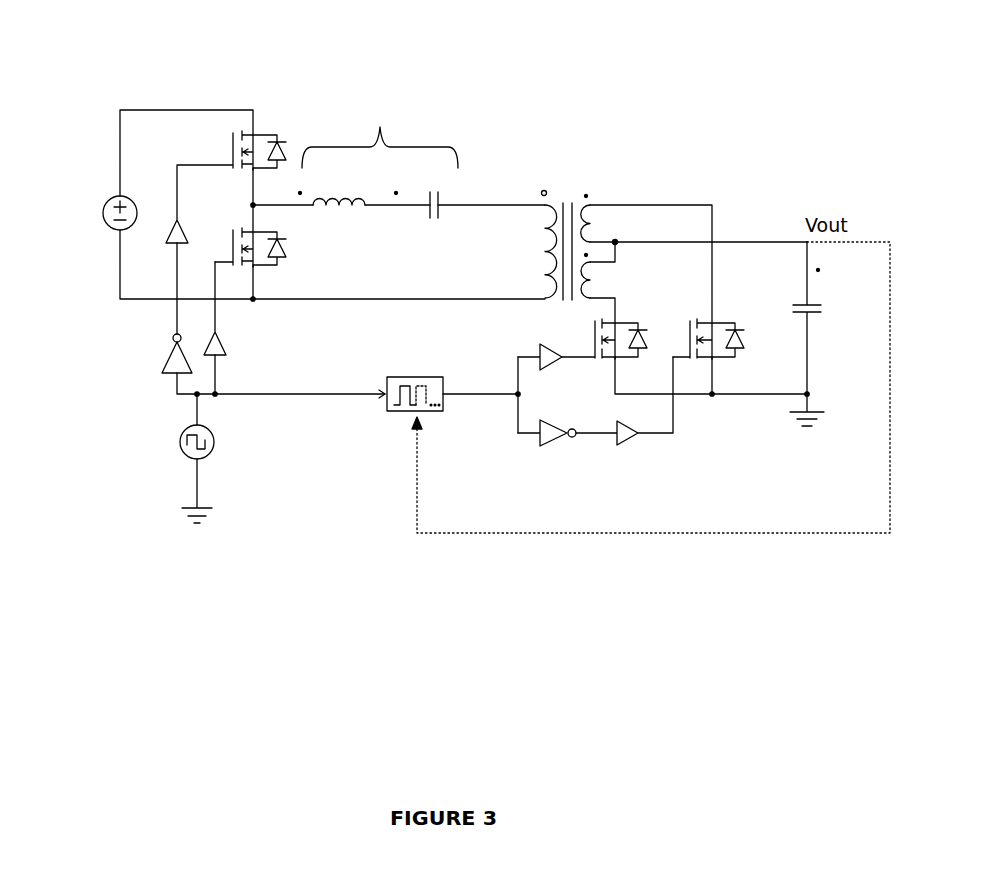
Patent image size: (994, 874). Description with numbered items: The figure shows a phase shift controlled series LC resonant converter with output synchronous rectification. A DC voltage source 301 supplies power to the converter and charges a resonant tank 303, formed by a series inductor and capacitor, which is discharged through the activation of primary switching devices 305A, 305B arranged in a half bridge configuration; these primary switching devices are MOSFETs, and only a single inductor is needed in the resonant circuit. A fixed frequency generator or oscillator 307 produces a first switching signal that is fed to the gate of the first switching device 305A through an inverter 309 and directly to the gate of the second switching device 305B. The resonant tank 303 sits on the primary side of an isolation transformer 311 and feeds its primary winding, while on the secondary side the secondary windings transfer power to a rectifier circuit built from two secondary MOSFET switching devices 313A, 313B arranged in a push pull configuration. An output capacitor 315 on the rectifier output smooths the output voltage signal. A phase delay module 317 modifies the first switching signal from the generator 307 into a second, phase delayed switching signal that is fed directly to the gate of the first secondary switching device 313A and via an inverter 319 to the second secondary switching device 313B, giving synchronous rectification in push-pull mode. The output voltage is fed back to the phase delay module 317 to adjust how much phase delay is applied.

The DC voltage source 301 is at (106, 185).
The resonant tank 303 is at (380, 158).
The first switching device 305A is at (272, 127).
The second switching device 305B is at (268, 273).
The fixed frequency generator 307 is at (168, 448).
The inverter 309 is at (150, 380).
The isolation transformer 311 is at (570, 192).
The first secondary switching device 313A is at (603, 364).
The second secondary switching device 313B is at (722, 368).
The output capacitor 315 is at (818, 318).
The phase delay module 317 is at (402, 418).
The inverter 319 is at (535, 440).